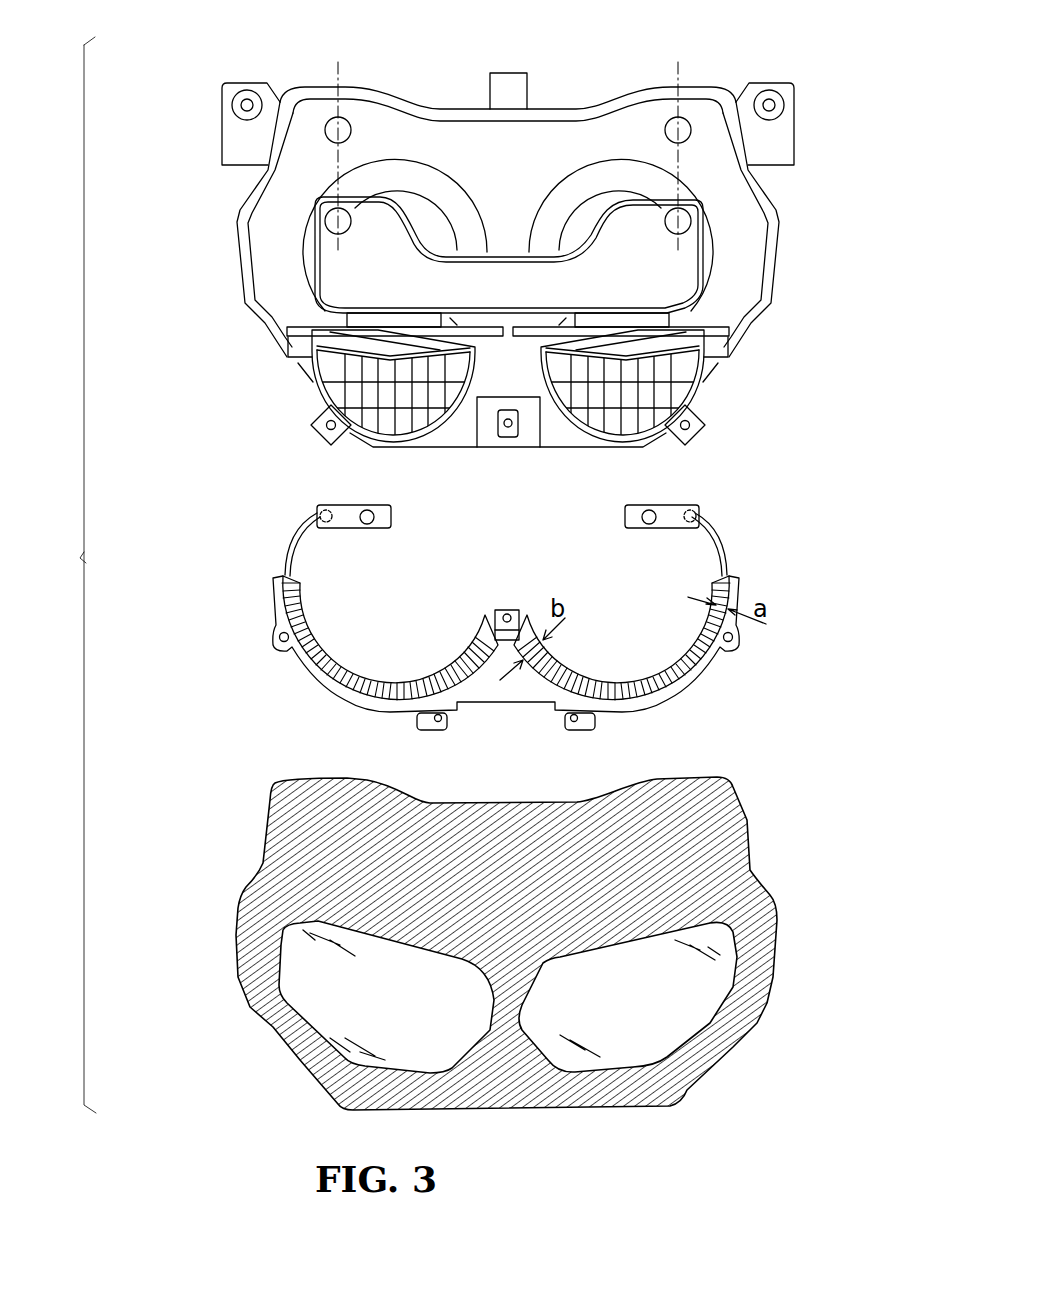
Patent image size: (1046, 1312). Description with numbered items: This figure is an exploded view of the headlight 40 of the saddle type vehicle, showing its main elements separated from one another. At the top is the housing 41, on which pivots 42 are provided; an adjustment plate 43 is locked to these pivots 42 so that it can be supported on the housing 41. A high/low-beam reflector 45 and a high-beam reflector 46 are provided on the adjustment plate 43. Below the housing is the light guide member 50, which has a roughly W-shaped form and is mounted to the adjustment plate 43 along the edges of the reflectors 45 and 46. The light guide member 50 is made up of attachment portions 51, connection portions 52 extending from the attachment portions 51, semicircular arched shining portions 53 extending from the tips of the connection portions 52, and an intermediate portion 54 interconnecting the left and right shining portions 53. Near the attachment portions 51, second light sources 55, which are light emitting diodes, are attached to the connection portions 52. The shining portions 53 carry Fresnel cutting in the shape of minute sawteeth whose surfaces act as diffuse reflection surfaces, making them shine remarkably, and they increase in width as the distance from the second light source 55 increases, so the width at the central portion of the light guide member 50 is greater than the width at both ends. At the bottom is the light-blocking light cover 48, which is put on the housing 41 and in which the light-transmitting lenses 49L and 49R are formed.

The headlight 40 is at (178, 85).
The housing 41 is at (745, 235).
The pivots 42 is at (683, 118).
The adjustment plate 43 is at (675, 278).
The high/low-beam reflector 45 is at (598, 420).
The high-beam reflector 46 is at (405, 420).
The light cover 48 is at (735, 830).
The light-transmitting lens 49R is at (310, 977).
The light-transmitting lens 49L is at (693, 990).
The light guide member 50 is at (700, 679).
The attachment portions 51 is at (636, 526).
The connection portions 52 is at (723, 548).
The shining portions 53 is at (632, 670).
The intermediate portion 54 is at (508, 608).
The second light sources 55 is at (687, 527).